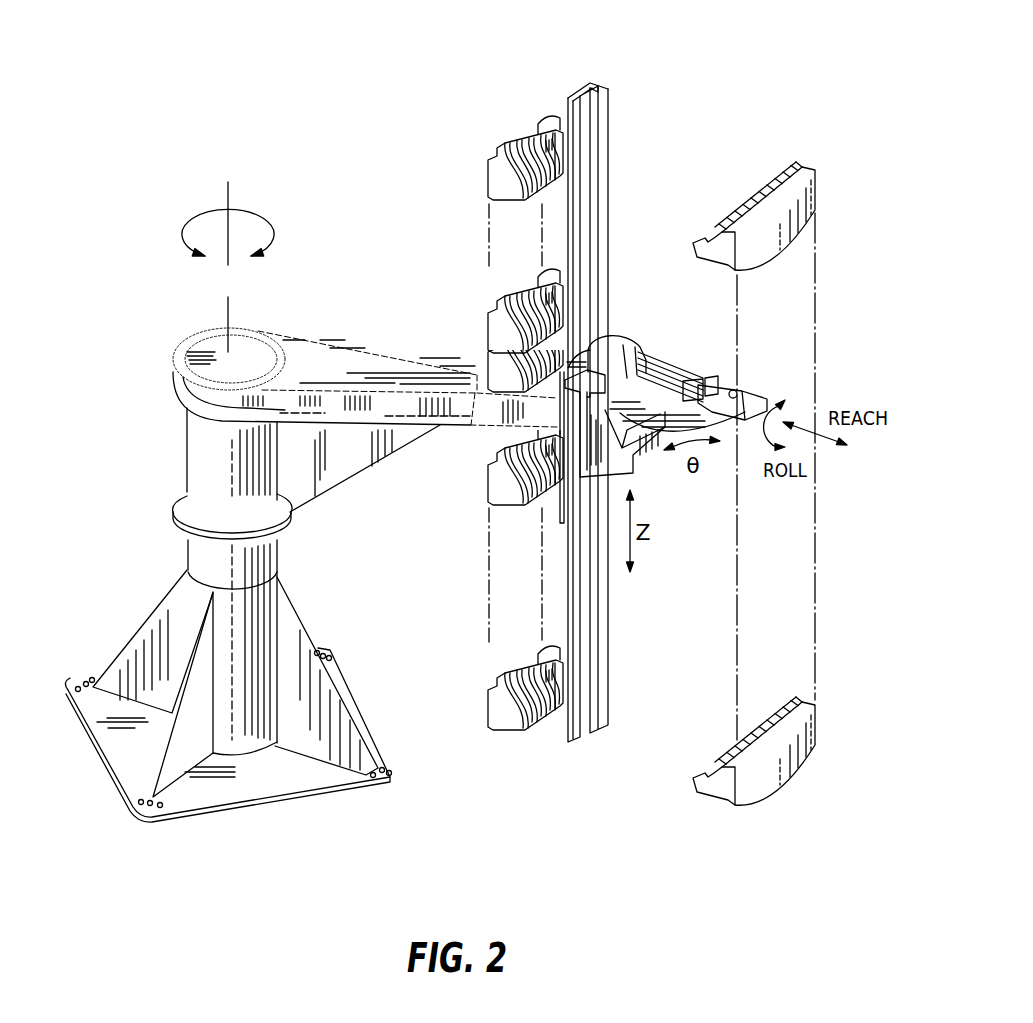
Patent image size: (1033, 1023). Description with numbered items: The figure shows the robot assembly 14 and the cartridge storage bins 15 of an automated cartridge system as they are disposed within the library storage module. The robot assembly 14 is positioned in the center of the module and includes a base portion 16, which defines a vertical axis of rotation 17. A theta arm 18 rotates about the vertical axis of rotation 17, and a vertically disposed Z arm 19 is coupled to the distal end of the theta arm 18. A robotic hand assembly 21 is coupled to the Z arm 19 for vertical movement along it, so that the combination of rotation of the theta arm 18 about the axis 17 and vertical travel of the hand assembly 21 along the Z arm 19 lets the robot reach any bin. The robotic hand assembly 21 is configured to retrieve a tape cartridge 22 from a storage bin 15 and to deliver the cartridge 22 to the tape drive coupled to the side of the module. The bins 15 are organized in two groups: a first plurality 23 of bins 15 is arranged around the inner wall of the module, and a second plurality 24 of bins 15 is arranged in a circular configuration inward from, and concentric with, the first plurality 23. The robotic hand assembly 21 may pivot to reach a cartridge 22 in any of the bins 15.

The robot assembly 14 is at (160, 449).
The cartridge storage bin 15 is at (717, 787).
The base portion 16 is at (297, 613).
The vertical axis of rotation 17 is at (228, 191).
The theta arm 18 is at (378, 358).
The Z arm 19 is at (610, 105).
The robotic hand assembly 21 is at (653, 347).
The tape cartridge 22 is at (573, 292).
The first plurality of bins 23 is at (792, 157).
The second plurality of bins 24 is at (541, 100).